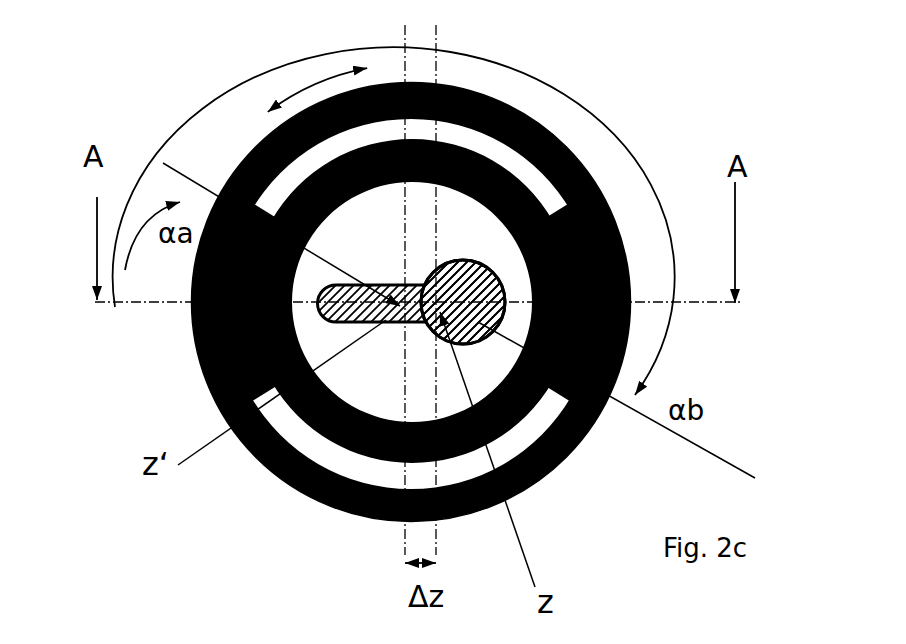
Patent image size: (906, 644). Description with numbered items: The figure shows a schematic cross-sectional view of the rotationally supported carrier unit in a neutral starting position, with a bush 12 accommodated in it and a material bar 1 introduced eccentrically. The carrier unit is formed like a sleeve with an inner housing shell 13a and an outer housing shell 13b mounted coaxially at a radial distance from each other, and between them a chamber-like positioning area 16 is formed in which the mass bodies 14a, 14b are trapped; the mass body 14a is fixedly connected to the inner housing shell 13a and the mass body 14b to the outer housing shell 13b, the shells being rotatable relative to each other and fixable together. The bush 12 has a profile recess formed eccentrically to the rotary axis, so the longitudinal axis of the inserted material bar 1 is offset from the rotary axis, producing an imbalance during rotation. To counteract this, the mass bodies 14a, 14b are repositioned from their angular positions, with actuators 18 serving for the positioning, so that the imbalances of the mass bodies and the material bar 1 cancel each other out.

The material bar 1 is at (494, 333).
The bush 12 is at (517, 318).
The inner housing shell 13a is at (540, 203).
The outer housing shell 13b is at (510, 107).
The mass body 14a is at (205, 372).
The mass body 14b is at (612, 240).
The positioning area 16 is at (323, 147).
The actuators for positioning 18 is at (270, 470).